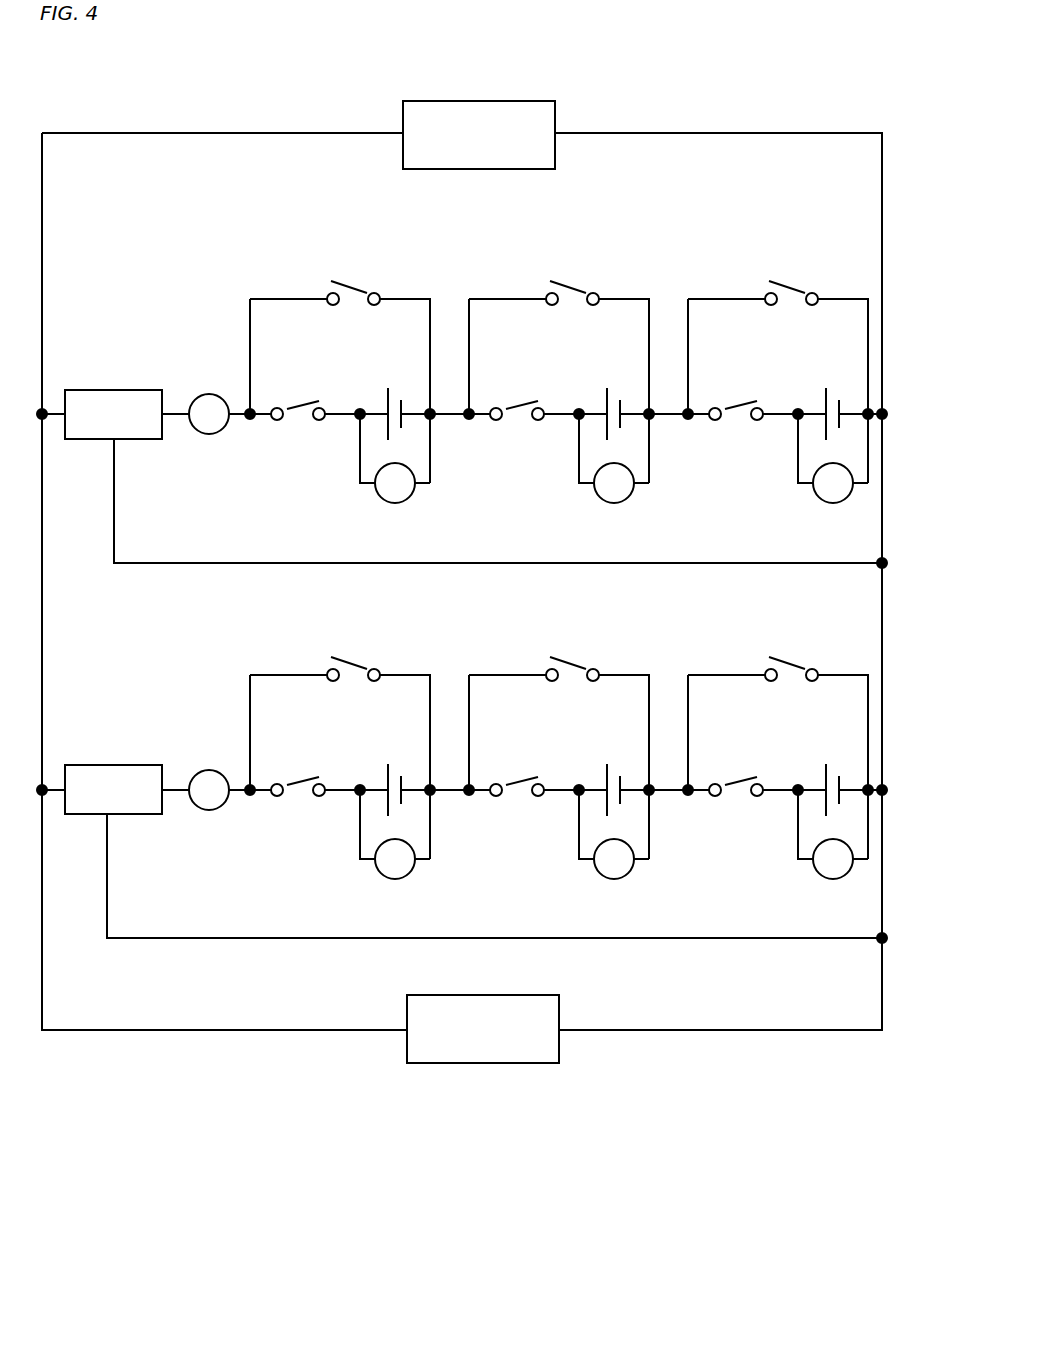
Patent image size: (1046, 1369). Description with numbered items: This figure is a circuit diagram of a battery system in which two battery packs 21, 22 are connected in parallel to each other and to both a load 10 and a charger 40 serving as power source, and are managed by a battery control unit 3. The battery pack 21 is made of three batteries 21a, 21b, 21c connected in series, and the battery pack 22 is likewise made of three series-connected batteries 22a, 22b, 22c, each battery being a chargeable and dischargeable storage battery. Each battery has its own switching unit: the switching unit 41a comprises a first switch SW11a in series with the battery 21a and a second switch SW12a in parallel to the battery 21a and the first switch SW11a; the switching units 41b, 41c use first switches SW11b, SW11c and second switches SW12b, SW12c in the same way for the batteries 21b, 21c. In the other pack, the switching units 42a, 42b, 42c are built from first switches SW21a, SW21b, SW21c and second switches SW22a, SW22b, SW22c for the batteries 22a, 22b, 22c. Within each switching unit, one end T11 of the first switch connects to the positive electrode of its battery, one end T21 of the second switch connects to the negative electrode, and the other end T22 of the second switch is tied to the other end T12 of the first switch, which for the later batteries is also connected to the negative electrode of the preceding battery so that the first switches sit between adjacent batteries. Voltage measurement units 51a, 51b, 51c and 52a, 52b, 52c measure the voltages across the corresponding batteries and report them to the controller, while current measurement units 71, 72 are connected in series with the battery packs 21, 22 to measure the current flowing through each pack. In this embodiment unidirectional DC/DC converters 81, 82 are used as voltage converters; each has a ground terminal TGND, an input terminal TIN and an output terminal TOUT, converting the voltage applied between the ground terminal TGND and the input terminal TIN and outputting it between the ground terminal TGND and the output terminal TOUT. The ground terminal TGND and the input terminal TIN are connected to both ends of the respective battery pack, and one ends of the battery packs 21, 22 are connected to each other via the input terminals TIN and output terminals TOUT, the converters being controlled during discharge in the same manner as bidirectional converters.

The battery control unit 3 is at (147, 283).
The load 10 is at (541, 995).
The charger 40 is at (534, 101).
The battery pack 21 is at (108, 1162).
The battery pack 22 is at (218, 1162).
The battery 21a is at (380, 393).
The battery 21b is at (599, 393).
The battery 21c is at (819, 393).
The battery 22a is at (380, 769).
The battery 22b is at (599, 769).
The battery 22c is at (819, 769).
The switching unit 41a is at (140, 1231).
The switching unit 41b is at (140, 1290).
The switching unit 41c is at (140, 1349).
The switching unit 42a is at (290, 1231).
The switching unit 42b is at (290, 1290).
The switching unit 42c is at (290, 1349).
The voltage measurement unit 51a is at (373, 509).
The voltage measurement unit 51b is at (592, 509).
The voltage measurement unit 51c is at (812, 509).
The voltage measurement unit 52a is at (373, 885).
The voltage measurement unit 52b is at (592, 885).
The voltage measurement unit 52c is at (812, 885).
The current measurement unit 71 is at (207, 396).
The current measurement unit 72 is at (207, 772).
The DC/DC converter 81 is at (105, 390).
The DC/DC converter 82 is at (105, 765).
The first switch SW11a is at (297, 383).
The first switch SW11b is at (516, 383).
The first switch SW11c is at (735, 383).
The second switch SW12a is at (347, 255).
The second switch SW12b is at (566, 255).
The second switch SW12c is at (785, 255).
The first switch SW21a is at (297, 759).
The first switch SW21b is at (516, 759).
The first switch SW21c is at (735, 759).
The second switch SW22a is at (347, 631).
The second switch SW22b is at (566, 631).
The second switch SW22c is at (785, 631).
The one end of first switch T11 is at (335, 417).
The other end of first switch T12 is at (250, 419).
The one end of second switch T21 is at (385, 298).
The other end of second switch T22 is at (300, 298).
The input terminal TIN is at (166, 412).
The output terminal TOUT is at (65, 412).
The ground terminal TGND is at (117, 439).